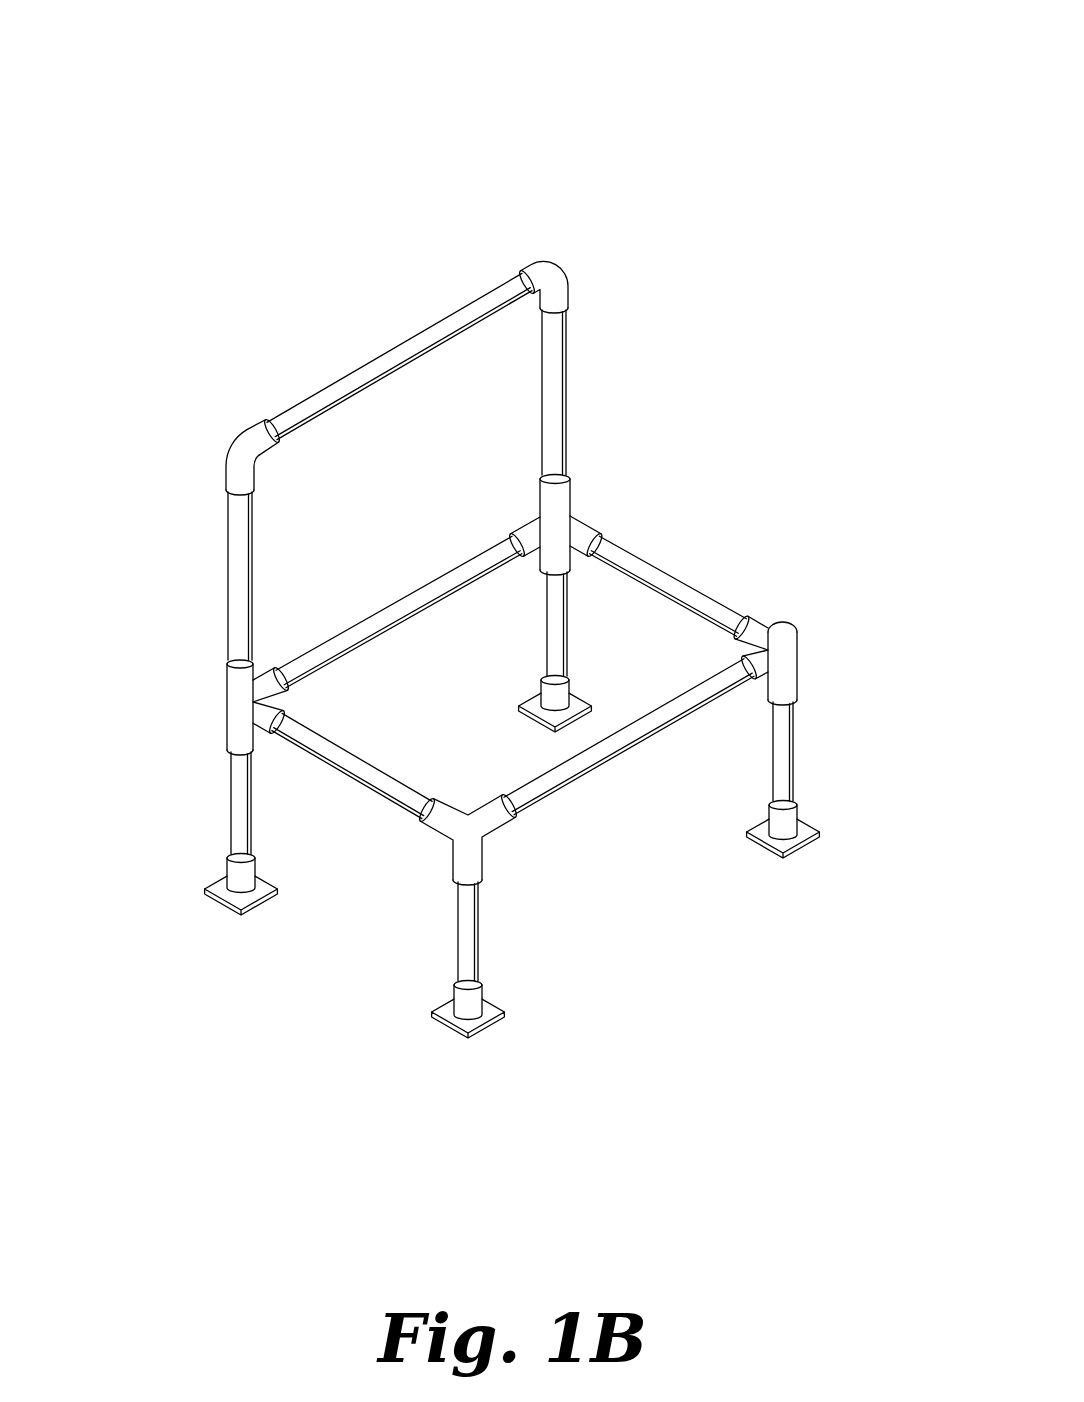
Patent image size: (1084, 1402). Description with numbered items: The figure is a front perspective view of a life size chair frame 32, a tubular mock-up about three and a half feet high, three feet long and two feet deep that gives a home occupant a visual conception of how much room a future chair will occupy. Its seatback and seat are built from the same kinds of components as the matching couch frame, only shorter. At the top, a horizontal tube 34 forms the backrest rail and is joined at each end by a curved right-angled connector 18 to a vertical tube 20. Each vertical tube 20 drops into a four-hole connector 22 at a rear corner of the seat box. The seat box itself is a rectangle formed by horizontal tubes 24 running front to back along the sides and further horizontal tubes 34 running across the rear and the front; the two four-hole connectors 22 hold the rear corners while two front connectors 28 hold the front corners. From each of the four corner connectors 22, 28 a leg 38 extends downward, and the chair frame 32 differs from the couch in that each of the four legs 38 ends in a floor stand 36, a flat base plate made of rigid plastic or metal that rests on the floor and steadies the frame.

The curved right-angled connector 18 is at (238, 457).
The vertical tube 20 is at (230, 557).
The four-hole connector 22 is at (228, 702).
The horizontal tube 24 is at (690, 572).
The front connector 28 is at (797, 643).
The chair frame 32 is at (478, 136).
The horizontal tube 34 is at (392, 347).
The floor stand 36 is at (228, 870).
The leg 38 is at (232, 778).